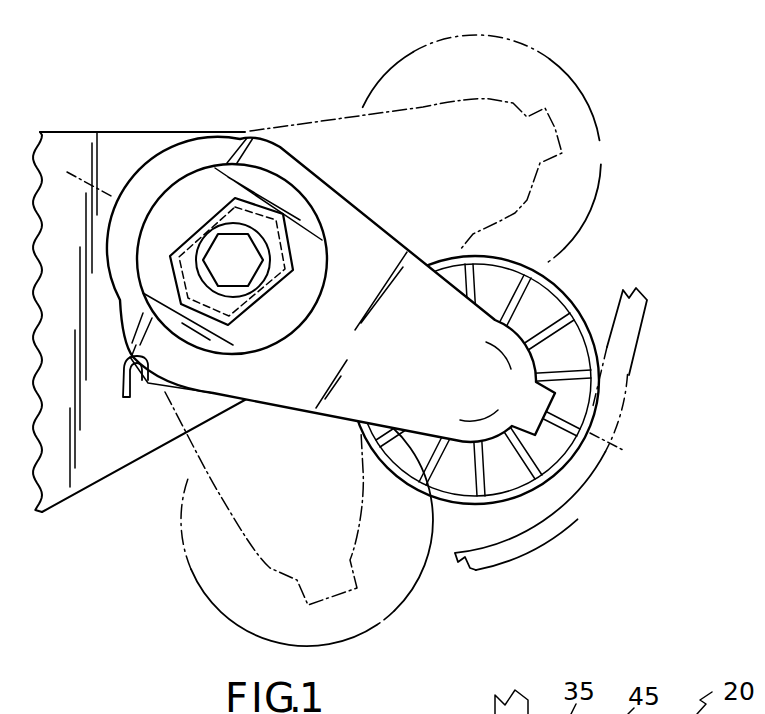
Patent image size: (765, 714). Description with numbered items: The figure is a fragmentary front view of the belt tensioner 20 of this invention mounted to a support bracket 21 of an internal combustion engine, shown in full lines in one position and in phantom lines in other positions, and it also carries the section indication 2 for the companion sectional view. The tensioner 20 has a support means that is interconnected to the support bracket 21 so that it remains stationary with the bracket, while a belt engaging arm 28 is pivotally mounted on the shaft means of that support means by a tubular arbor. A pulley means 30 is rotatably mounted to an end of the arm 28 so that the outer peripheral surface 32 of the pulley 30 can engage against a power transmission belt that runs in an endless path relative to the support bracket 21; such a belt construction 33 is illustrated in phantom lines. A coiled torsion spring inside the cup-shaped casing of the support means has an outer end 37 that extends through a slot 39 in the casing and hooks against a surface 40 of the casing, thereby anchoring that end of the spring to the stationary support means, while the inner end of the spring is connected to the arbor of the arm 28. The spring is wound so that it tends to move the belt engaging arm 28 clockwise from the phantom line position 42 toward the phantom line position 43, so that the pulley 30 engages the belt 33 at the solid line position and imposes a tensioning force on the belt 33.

The section line 2- 2 is at (81, 146).
The belt tensioner 20 is at (331, 98).
The support bracket 21 is at (110, 456).
The arm 28 is at (375, 247).
The pulley means 30 is at (538, 300).
The outer peripheral surface 32 is at (587, 323).
The belt construction 33 is at (632, 370).
The outer end 37 is at (126, 383).
The slot 39 is at (130, 357).
The surface 40 is at (146, 392).
The phantom line position 42 is at (596, 106).
The phantom line position 43 is at (216, 609).